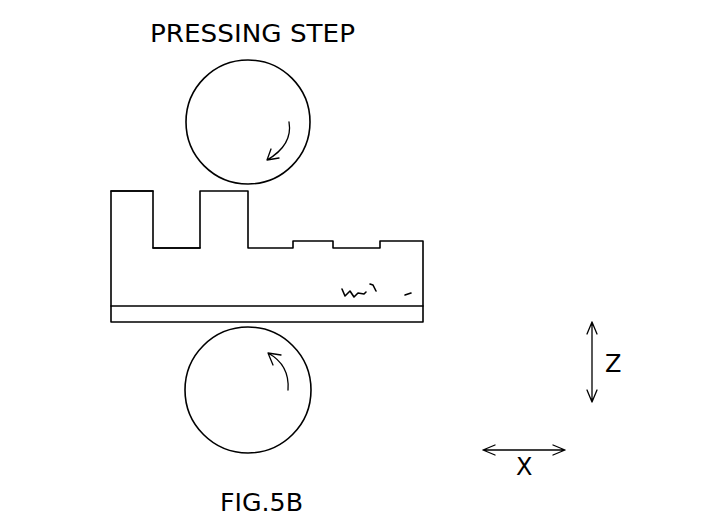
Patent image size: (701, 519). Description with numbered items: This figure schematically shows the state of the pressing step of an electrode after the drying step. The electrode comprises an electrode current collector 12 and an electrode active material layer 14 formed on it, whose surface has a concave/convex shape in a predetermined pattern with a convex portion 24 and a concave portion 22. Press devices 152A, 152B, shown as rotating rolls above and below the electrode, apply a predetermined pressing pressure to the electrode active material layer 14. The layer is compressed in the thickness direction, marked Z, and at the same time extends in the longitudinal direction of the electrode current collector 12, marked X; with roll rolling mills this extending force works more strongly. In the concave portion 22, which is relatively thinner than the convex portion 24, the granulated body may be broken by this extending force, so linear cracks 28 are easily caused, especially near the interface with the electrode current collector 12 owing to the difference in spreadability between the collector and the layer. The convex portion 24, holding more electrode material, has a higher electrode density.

The electrode current collector 12 is at (115, 312).
The electrode active material layer 14 is at (115, 255).
The concave portion 22 is at (177, 248).
The convex portion 24 is at (122, 192).
The linear cracks 28 is at (362, 295).
The press device 152A is at (310, 107).
The press device 152B is at (307, 410).